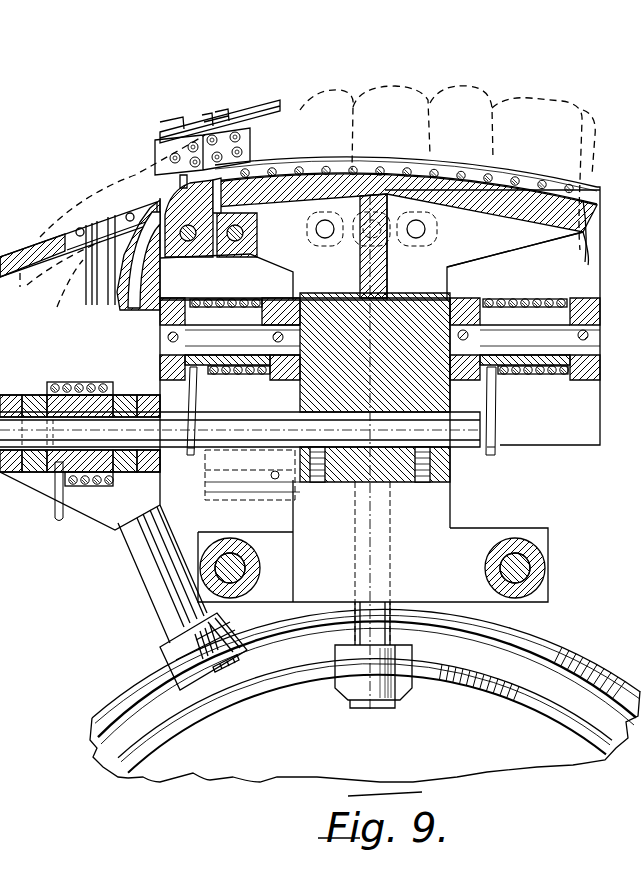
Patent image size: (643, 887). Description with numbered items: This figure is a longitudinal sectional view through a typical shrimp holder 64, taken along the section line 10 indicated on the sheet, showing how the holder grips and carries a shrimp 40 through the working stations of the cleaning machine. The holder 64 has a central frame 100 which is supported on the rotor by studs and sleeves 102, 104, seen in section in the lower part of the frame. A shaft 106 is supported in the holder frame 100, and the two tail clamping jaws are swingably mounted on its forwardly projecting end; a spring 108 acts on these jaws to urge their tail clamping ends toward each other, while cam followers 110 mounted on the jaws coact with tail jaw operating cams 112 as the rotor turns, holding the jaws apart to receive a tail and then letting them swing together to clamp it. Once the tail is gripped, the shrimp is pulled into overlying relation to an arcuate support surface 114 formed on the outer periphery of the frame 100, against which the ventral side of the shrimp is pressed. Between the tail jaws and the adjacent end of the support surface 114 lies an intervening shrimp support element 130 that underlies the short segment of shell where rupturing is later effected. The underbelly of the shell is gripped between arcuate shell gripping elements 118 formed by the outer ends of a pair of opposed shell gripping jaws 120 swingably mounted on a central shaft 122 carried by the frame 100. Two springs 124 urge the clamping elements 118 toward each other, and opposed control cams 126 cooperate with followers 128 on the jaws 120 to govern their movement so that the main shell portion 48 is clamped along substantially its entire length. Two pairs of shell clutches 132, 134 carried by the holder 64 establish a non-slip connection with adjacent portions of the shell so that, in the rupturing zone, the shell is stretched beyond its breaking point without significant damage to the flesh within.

The section line 10 is at (82, 88).
The shrimp 40 is at (495, 90).
The main portion of the shrimp shell 48 is at (408, 92).
The holder 64 is at (117, 166).
The central frame 100 is at (448, 470).
The stud 102 is at (258, 553).
The sleeve 104 is at (258, 578).
The shaft 106 is at (395, 436).
The spring 108 is at (53, 501).
The cam follower 110 is at (170, 653).
The tail jaw operating cam 112 is at (577, 660).
The arcuate support surface 114 is at (583, 215).
The shell gripping element 118 is at (366, 160).
The shell gripping jaw 120 is at (543, 449).
The central shaft 122 is at (536, 226).
The spring 124 is at (221, 304).
The control cam 126 is at (547, 710).
The follower 128 is at (343, 674).
The shrimp support element 130 is at (166, 254).
The shell clutch 132 is at (231, 137).
The shell clutch 134 is at (162, 157).